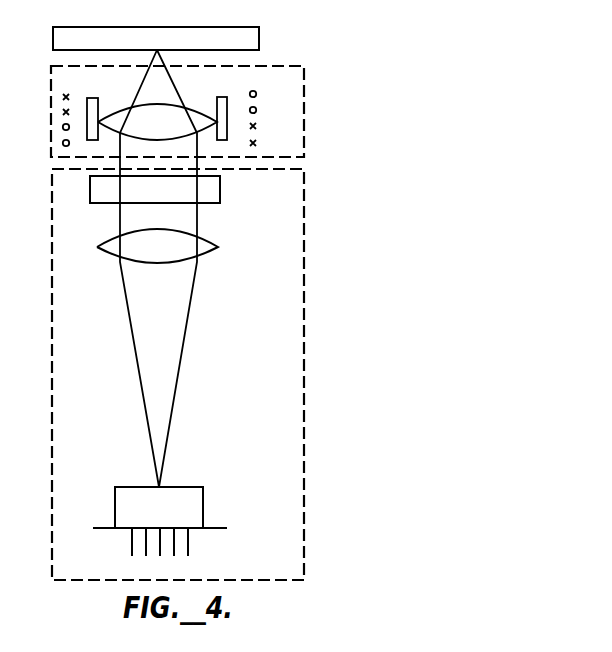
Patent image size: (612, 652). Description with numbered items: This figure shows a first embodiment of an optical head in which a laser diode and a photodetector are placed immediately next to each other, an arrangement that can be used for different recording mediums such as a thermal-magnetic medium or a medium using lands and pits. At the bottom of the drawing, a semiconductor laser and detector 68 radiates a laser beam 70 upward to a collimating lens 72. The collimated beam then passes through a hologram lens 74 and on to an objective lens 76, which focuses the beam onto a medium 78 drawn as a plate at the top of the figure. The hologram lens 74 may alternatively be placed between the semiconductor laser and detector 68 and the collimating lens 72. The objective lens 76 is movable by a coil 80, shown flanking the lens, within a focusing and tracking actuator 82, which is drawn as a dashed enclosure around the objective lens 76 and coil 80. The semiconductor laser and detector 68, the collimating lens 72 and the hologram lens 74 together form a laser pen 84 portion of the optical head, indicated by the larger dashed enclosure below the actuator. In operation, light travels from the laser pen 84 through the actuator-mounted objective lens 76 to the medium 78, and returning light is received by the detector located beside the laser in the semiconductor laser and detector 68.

The semiconductor laser and detector 68 is at (183, 487).
The laser beam 70 is at (185, 343).
The collimating lens 72 is at (207, 237).
The hologram lens 74 is at (220, 190).
The objective lens 76 is at (187, 109).
The medium 78 is at (252, 27).
The coil 80 is at (73, 101).
The focusing and tracking actuator 82 is at (305, 78).
The laser pen 84 is at (308, 207).